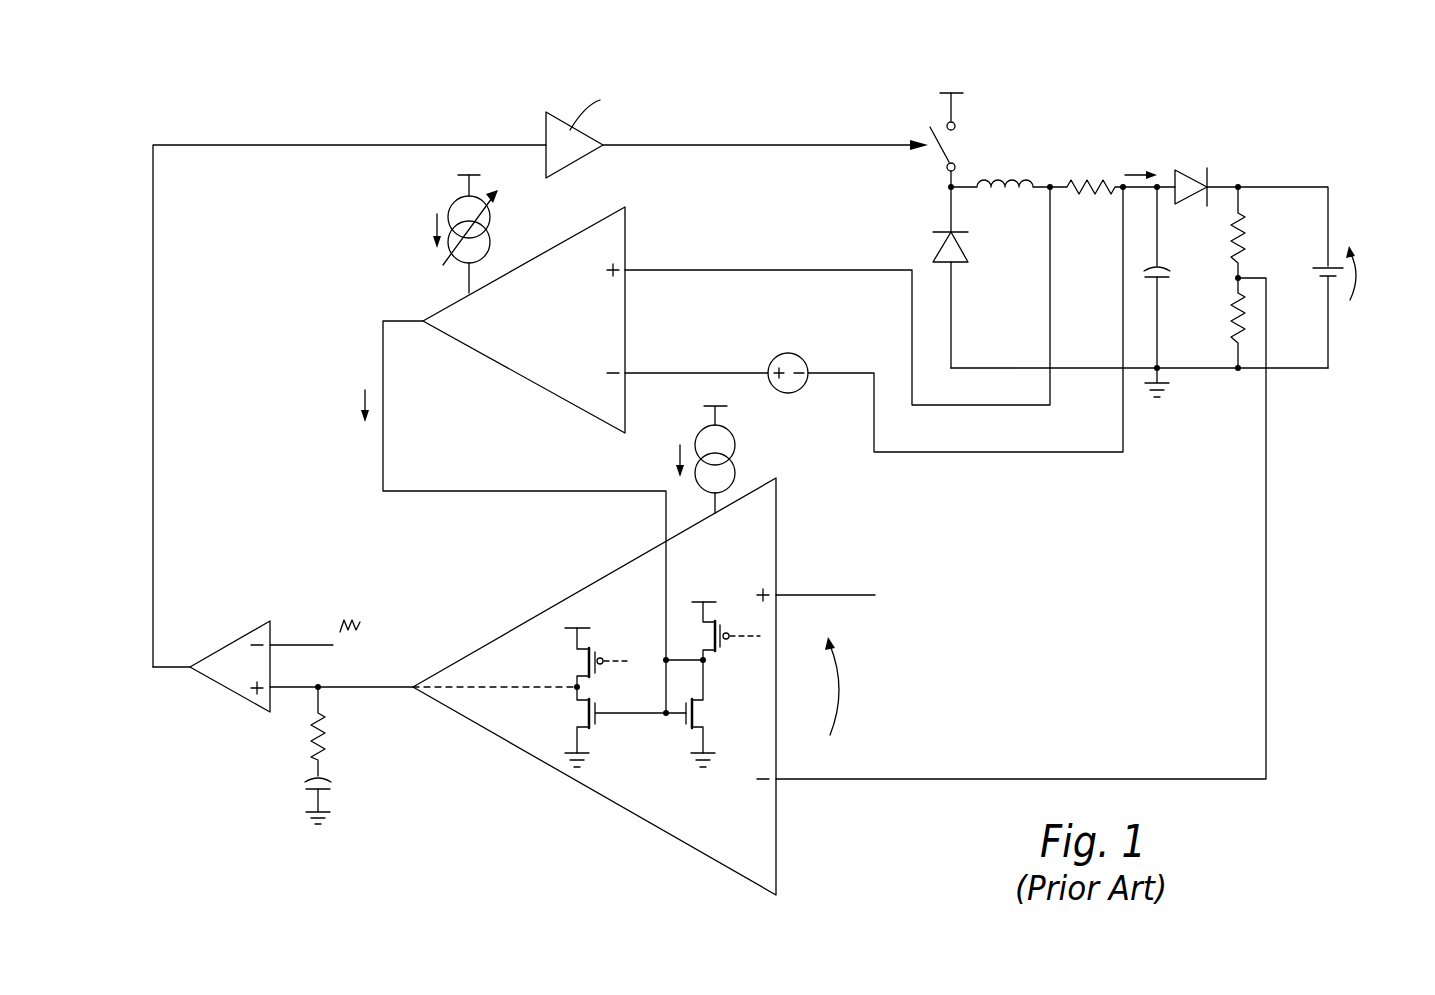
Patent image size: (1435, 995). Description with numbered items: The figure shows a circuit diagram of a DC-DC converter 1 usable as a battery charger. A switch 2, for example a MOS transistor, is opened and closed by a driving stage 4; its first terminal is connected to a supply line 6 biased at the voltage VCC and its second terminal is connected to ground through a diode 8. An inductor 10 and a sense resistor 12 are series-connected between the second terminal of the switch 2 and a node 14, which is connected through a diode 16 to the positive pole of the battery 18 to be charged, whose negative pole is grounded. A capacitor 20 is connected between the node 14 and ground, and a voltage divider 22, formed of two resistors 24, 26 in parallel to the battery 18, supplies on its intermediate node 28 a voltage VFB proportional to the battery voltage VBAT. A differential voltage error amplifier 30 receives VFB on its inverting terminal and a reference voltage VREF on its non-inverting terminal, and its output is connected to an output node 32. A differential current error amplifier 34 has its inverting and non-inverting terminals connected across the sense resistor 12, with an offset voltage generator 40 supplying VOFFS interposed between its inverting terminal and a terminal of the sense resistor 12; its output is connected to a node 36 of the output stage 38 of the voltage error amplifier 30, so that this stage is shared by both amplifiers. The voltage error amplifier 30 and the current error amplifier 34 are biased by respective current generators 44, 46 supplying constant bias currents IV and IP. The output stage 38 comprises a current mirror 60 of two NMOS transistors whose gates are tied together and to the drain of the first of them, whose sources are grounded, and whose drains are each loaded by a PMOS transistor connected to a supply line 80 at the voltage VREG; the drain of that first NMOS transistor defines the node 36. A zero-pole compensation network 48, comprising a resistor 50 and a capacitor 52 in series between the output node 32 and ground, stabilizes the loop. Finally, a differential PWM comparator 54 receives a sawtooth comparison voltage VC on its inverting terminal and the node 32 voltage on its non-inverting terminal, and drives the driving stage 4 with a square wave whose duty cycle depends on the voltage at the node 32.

The DC-DC converter 1 is at (1343, 105).
The switch 2 is at (945, 141).
The driving stage 4 is at (585, 162).
The supply line 6 is at (480, 176).
The diode 8 is at (970, 248).
The inductor 10 is at (1013, 183).
The sense resistor 12 is at (1085, 192).
The node 14 is at (1158, 184).
The diode 16 is at (1190, 172).
The battery 18 is at (1318, 272).
The capacitor 20 is at (1163, 278).
The voltage divider 22 is at (1250, 255).
The resistor 24 is at (1233, 238).
The resistor 26 is at (1233, 320).
The intermediate node 28 is at (1235, 284).
The voltage error amplifier 30 is at (596, 795).
The output node 32 is at (322, 684).
The current error amplifier 34 is at (520, 385).
The node 36 is at (665, 661).
The output stage 38 is at (742, 585).
The offset voltage generator 40 is at (773, 357).
The current generator 44 is at (735, 465).
The current generator 46 is at (448, 205).
The zero-pole compensation network 48 is at (280, 763).
The resistor 50 is at (330, 735).
The capacitor 52 is at (326, 790).
The differential comparator 54 is at (228, 690).
The current mirror 60 is at (659, 732).
The supply line 80 is at (585, 627).